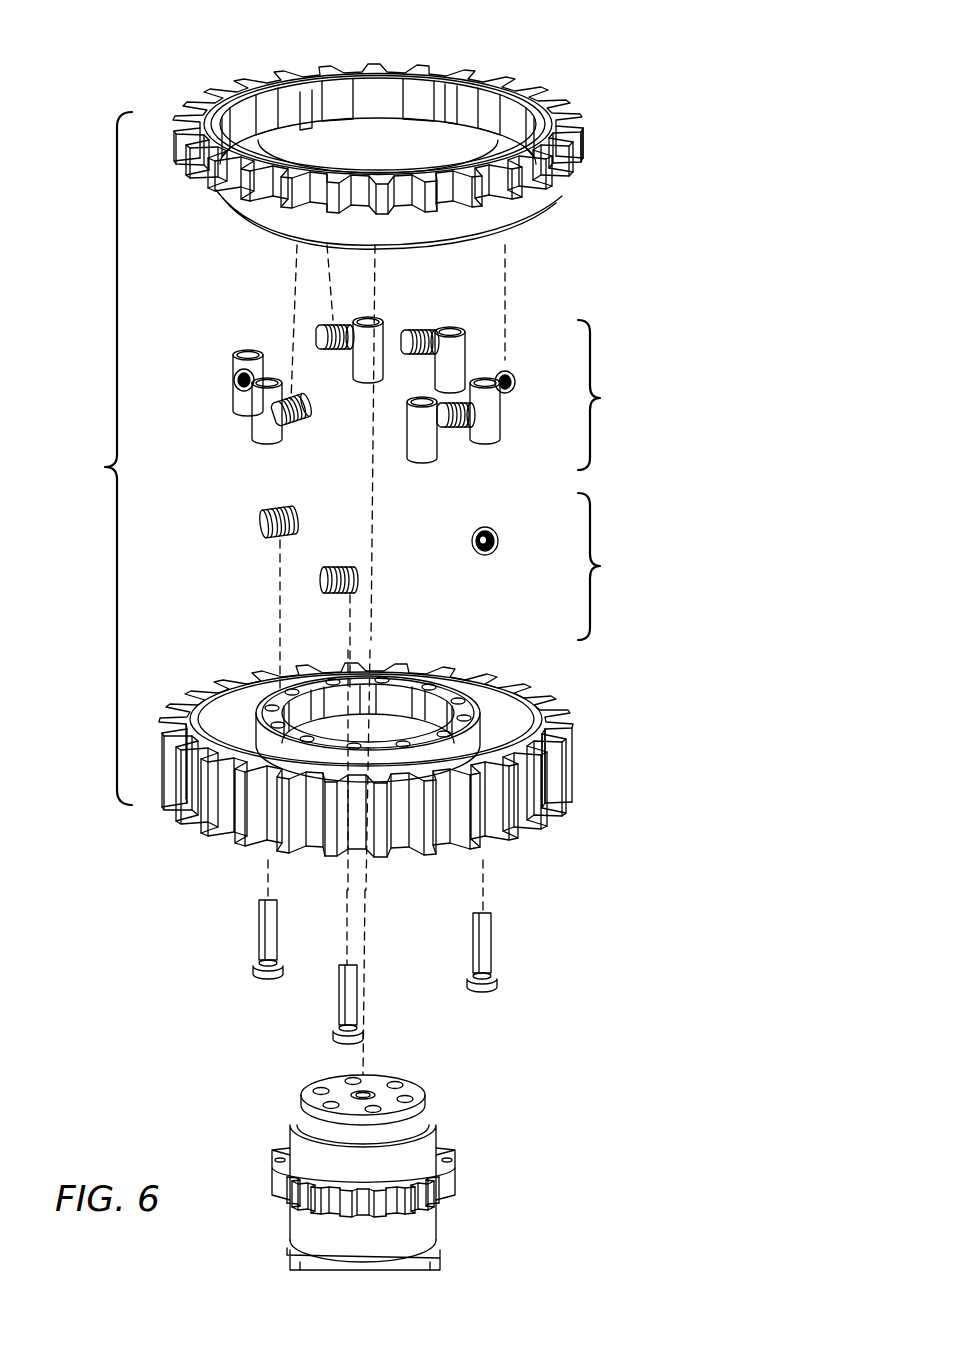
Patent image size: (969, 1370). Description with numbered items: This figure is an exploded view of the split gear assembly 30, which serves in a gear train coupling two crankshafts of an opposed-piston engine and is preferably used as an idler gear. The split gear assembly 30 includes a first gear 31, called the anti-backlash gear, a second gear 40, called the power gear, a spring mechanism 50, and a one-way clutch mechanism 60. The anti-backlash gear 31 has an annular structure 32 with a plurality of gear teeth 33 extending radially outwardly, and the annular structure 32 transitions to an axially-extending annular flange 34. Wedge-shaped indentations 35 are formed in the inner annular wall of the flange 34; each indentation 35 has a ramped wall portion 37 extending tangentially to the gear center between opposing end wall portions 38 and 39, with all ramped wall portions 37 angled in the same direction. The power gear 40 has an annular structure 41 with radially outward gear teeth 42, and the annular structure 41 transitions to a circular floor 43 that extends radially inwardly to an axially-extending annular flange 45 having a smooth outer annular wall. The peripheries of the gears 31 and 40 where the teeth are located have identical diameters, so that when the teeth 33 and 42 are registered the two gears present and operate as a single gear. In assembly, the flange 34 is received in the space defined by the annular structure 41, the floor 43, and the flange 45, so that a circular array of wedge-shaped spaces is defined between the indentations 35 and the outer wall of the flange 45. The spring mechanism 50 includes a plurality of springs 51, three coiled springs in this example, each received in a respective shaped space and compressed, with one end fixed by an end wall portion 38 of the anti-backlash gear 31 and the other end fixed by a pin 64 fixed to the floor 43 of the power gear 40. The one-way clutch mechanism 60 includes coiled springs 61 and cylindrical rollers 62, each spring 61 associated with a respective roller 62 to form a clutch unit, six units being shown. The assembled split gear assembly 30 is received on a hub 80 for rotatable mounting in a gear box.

The split gear assembly 30 is at (104, 458).
The first gear 31 is at (578, 97).
The annular structure 32 is at (548, 118).
The gear teeth 33 is at (570, 160).
The annular flange 34 is at (510, 212).
The wedge-shaped indentations 35 is at (433, 126).
The ramped wall portion 37 is at (462, 105).
The end wall portion 38 is at (535, 135).
The end wall portion 39 is at (405, 118).
The second gear 40 is at (430, 778).
The annular structure 41 is at (517, 712).
The gear teeth 42 is at (545, 812).
The circular floor 43 is at (238, 750).
The annular flange 45 is at (463, 702).
The spring mechanism 50 is at (408, 569).
The springs 51 is at (260, 520).
The one-way clutch mechanism 60 is at (387, 390).
The coiled springs 61 is at (238, 383).
The cylindrical rollers 62 is at (243, 360).
The pin 64 is at (263, 930).
The hub 80 is at (478, 1148).